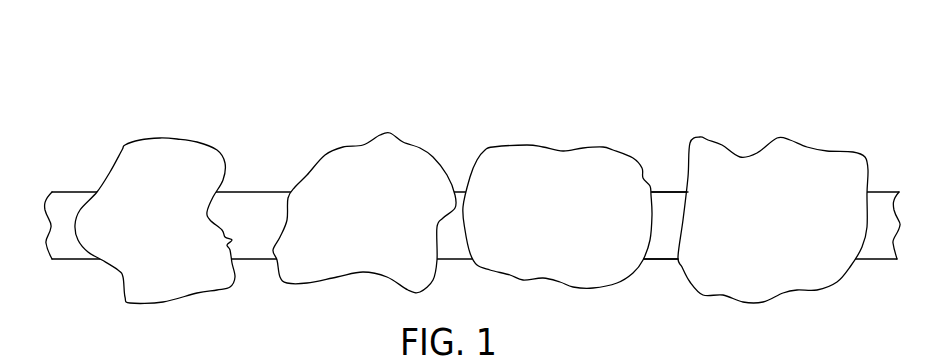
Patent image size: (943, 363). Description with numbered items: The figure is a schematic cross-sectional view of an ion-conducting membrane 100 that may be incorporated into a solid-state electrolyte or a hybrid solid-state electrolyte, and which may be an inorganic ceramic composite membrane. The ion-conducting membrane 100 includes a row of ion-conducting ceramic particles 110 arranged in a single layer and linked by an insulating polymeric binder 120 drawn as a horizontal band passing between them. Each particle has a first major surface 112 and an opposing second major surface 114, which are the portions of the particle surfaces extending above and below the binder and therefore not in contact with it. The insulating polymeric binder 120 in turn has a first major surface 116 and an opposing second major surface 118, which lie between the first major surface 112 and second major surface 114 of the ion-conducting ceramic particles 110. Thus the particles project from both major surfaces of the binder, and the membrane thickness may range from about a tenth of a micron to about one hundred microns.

The ion-conducting membrane 100 is at (162, 55).
The ion-conducting ceramic particles 110 is at (353, 163).
The first major surface 112 is at (583, 147).
The second major surface 114 is at (578, 287).
The first major surface 116 is at (655, 192).
The second major surface 118 is at (660, 259).
The insulating polymeric binder 120 is at (668, 227).